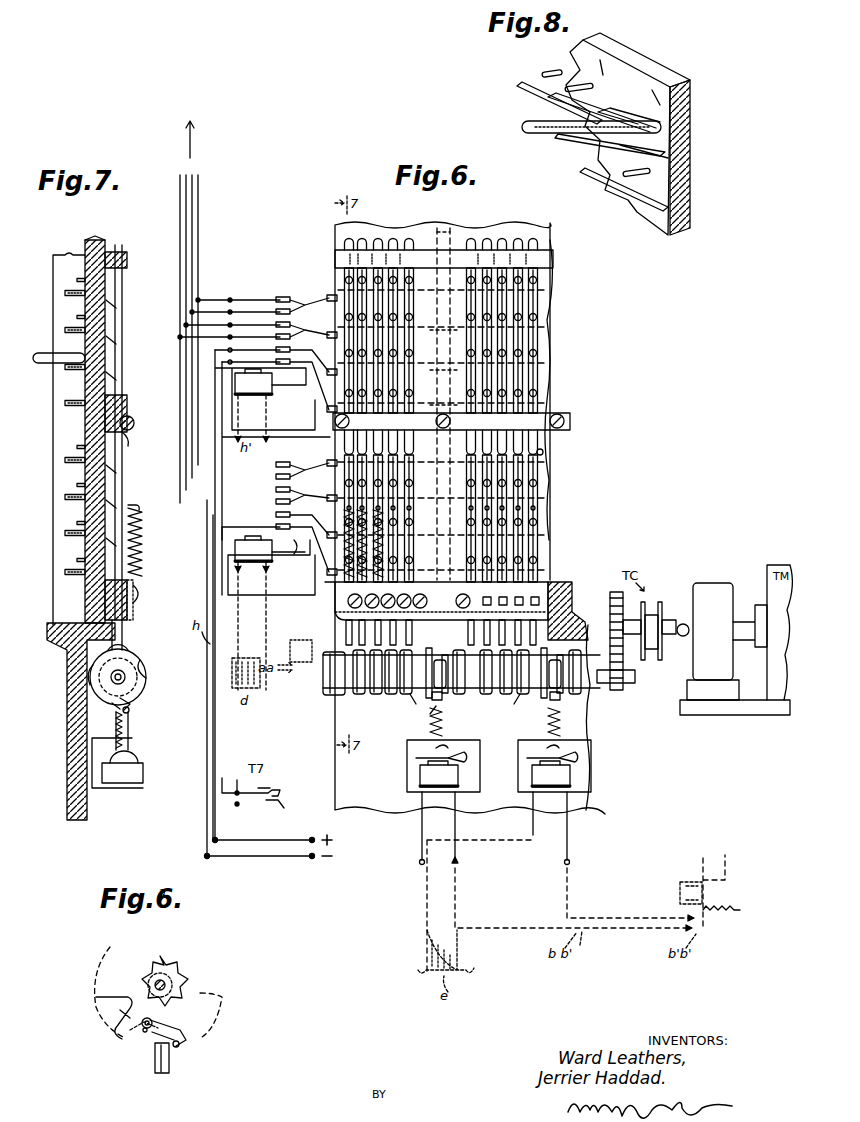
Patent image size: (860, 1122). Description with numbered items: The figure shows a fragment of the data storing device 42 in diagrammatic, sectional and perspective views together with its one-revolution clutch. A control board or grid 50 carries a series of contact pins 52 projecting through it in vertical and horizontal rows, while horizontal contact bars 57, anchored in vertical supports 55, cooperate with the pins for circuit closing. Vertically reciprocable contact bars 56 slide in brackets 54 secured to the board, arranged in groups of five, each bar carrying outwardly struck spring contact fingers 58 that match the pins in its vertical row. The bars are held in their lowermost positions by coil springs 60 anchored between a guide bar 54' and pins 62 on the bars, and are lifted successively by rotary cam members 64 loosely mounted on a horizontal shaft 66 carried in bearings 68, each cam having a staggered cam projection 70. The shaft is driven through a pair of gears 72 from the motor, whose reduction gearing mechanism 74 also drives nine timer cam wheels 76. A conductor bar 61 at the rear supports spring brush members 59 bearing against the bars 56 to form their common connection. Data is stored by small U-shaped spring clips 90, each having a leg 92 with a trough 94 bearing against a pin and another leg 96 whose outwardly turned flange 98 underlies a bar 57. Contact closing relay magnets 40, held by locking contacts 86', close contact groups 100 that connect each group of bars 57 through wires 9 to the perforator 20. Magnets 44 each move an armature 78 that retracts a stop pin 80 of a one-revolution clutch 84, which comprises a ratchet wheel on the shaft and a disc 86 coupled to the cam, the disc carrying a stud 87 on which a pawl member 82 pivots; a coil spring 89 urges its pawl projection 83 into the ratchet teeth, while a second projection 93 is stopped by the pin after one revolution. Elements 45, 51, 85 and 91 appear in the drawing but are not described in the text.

In FIG. 6, the wires 9 is at (201, 194).
In FIG. 6, the perforator 20 is at (247, 139).
In FIG. 6, the contact closing relay magnets 40 is at (253, 465).
In FIG. 6, the data storing device 42 is at (464, 516).
In FIG. 7, the magnets 44 is at (122, 773).
In FIG. 6, the magnets 44 is at (495, 774).
In FIG. 6, the contact 45 is at (700, 880).
In FIG. 7, the control board or grid 50 is at (108, 244).
In FIG. 8, the control board or grid 50 is at (660, 75).
In FIG. 6, the control board or grid 50 is at (428, 224).
In FIG. 6, the contact 51 is at (300, 640).
In FIG. 7, the contact pins 52 is at (110, 290).
In FIG. 8, the contact pins 52 is at (568, 78).
In FIG. 6, the contact pins 52 is at (540, 285).
In FIG. 7, the brackets 54 is at (129, 340).
In FIG. 6, the brackets 54 is at (466, 335).
In FIG. 7, the guide bar 54' is at (137, 600).
In FIG. 6, the guide bar 54' is at (438, 611).
In FIG. 7, the vertical supports 55 is at (68, 250).
In FIG. 6, the vertical supports 55 is at (443, 232).
In FIG. 7, the vertically reciprocable contact bars 56 is at (120, 336).
In FIG. 6, the vertically reciprocable contact bars 56 is at (517, 521).
In FIG. 7, the contact bars 57 is at (70, 468).
In FIG. 8, the contact bars 57 is at (530, 98).
In FIG. 6, the contact bars 57 is at (550, 300).
In FIG. 7, the spring contact fingers 58 is at (118, 355).
In FIG. 7, the spring brush members 59 is at (128, 440).
In FIG. 6, the spring brush members 59 is at (540, 456).
In FIG. 7, the coil spring 60 is at (142, 556).
In FIG. 7, the conductor bar 61 is at (133, 424).
In FIG. 6, the conductor bar 61 is at (545, 450).
In FIG. 7, the pins 62 is at (137, 508).
In FIG. 7, the rotary cam members 64 is at (145, 664).
In FIG. 6, the rotary cam members 64 is at (368, 696).
In FIG. 7, the horizontal shaft 66 is at (112, 680).
In FIG. 6, the horizontal shaft 66 is at (323, 672).
In FIG. 6A, the horizontal shaft 66 is at (182, 988).
In FIG. 6, the bearings 68 is at (326, 695).
In FIG. 7, the cam projection 70 is at (100, 660).
In FIG. 6, the cam projection 70 is at (512, 696).
In FIG. 6, the gears 72 is at (613, 683).
In FIG. 6, the reduction gearing mechanism 74 is at (735, 649).
In FIG. 6, the timer cam wheels 76 is at (658, 602).
In FIG. 7, the armature 78 is at (137, 757).
In FIG. 6, the armature 78 is at (447, 761).
In FIG. 7, the stop pin 80 is at (132, 727).
In FIG. 6, the stop pin 80 is at (442, 722).
In FIG. 6A, the stop pin 80 is at (172, 1072).
In FIG. 7, the pawl member 82 is at (135, 700).
In FIG. 6, the pawl member 82 is at (438, 695).
In FIG. 6A, the pawl member 82 is at (179, 1038).
In FIG. 6A, the pawl projection 83 is at (98, 997).
In FIG. 7, the one-revolution clutch 84 is at (146, 674).
In FIG. 6, the one-revolution clutch 84 is at (440, 660).
In FIG. 6A, the one-revolution clutch 84 is at (182, 970).
In FIG. 6A, the pivot 85 is at (142, 1024).
In FIG. 7, the disc 86 is at (132, 637).
In FIG. 6, the disc 86 is at (473, 686).
In FIG. 6A, the disc 86 is at (91, 992).
In FIG. 6, the locking contacts 86' is at (290, 559).
In FIG. 7, the stud 87 is at (116, 708).
In FIG. 6A, the stud 87 is at (145, 1028).
In FIG. 6, the coil spring 89 is at (430, 715).
In FIG. 6A, the coil spring 89 is at (140, 1040).
In FIG. 7, the U-shaped spring clips 90 is at (40, 354).
In FIG. 8, the U-shaped spring clips 90 is at (561, 142).
In FIG. 6A, the hub 91 is at (178, 960).
In FIG. 8, the leg 92 is at (586, 120).
In FIG. 7, the second projection 93 is at (130, 712).
In FIG. 6A, the second projection 93 is at (180, 1048).
In FIG. 8, the trough 94 is at (617, 118).
In FIG. 8, the leg 96 is at (585, 142).
In FIG. 8, the outwardly turned flange 98 is at (667, 160).
In FIG. 6, the contact groups 100 is at (300, 325).